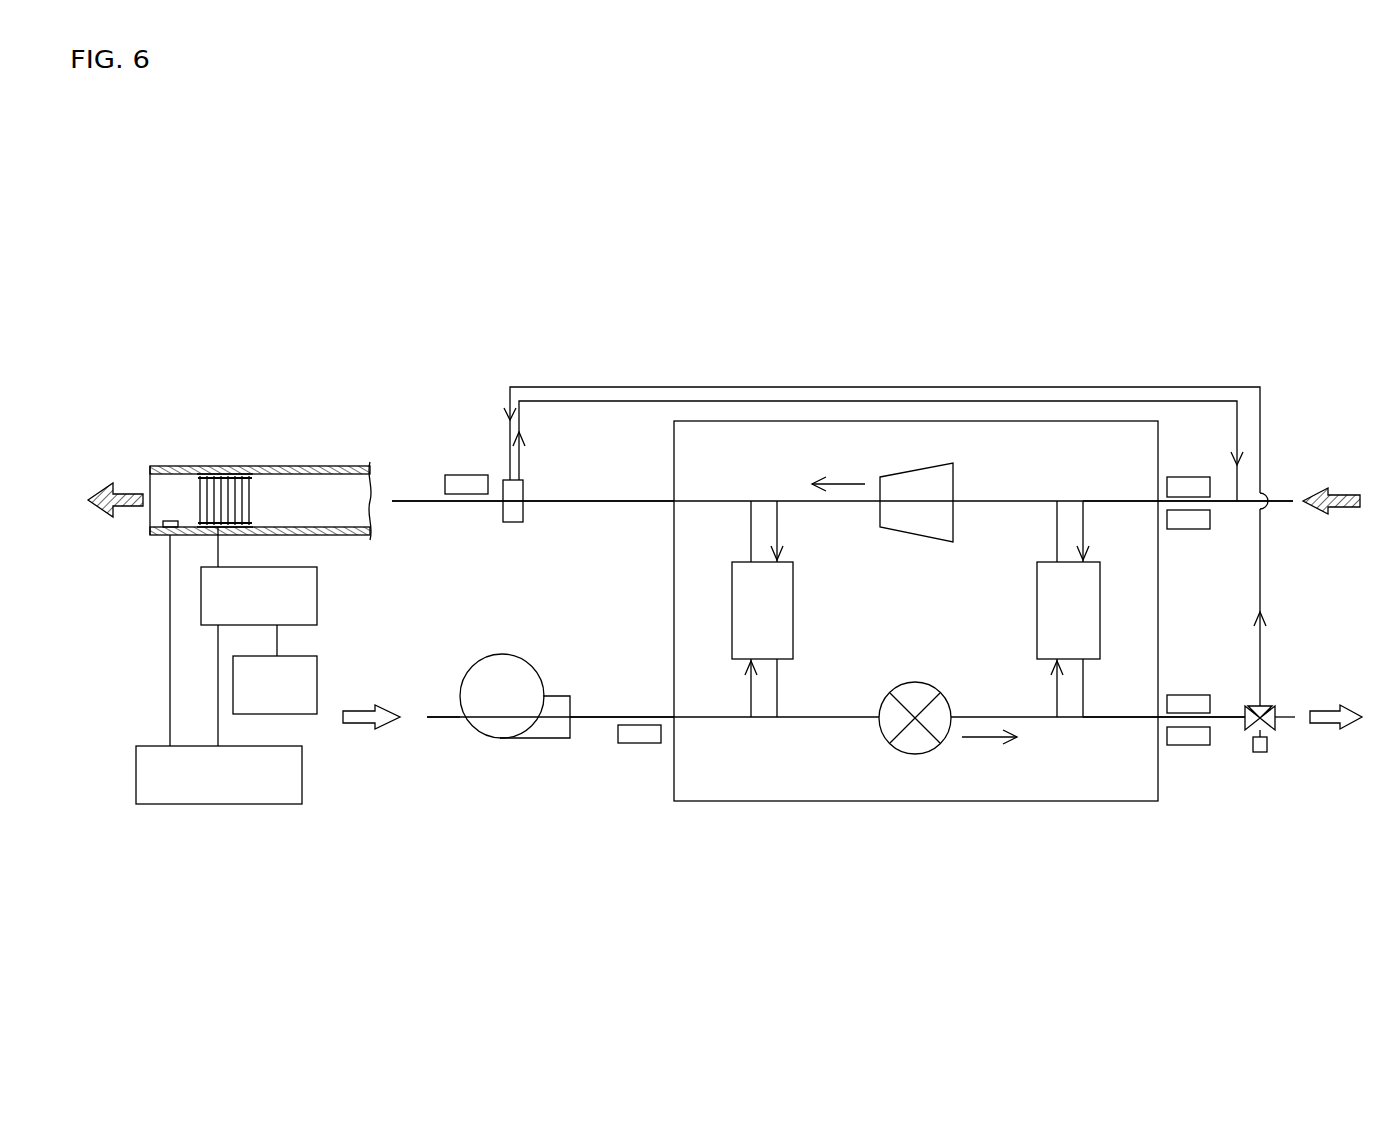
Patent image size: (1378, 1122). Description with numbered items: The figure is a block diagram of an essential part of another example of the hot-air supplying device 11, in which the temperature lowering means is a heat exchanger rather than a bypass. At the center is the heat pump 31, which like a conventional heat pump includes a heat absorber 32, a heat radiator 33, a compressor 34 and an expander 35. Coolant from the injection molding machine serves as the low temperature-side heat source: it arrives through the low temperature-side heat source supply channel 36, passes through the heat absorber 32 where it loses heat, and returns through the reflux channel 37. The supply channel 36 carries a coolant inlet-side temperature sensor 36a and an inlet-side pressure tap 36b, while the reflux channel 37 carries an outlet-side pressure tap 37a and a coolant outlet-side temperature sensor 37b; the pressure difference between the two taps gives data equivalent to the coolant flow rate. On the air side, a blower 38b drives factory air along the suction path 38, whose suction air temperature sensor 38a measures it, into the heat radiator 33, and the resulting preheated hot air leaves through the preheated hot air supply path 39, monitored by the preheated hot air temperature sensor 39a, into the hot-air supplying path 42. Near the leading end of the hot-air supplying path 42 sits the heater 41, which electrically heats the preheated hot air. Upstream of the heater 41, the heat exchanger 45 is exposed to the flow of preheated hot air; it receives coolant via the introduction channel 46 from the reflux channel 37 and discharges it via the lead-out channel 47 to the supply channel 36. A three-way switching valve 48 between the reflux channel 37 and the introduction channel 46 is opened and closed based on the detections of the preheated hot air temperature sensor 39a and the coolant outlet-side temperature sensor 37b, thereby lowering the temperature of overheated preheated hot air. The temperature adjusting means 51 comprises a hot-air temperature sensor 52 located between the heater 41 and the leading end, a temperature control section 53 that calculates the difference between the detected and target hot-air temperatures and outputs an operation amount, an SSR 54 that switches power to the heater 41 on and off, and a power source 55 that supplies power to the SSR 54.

The hot-air supplying device 11 is at (1060, 305).
The heat pump 31 is at (925, 420).
The heat absorber 32 is at (1102, 640).
The heat radiator 33 is at (795, 612).
The compressor 34 is at (957, 470).
The expander 35 is at (945, 693).
The low temperature-side heat source supply channel 36 is at (1105, 499).
The coolant inlet-side temperature sensor 36a is at (1190, 475).
The inlet-side pressure tap 36b is at (1190, 531).
The reflux channel 37 is at (1105, 720).
The outlet-side pressure tap 37a is at (1190, 693).
The coolant outlet-side temperature sensor 37b is at (1190, 747).
The suction path 38 is at (590, 720).
The suction air temperature sensor 38a is at (640, 745).
The blower 38b is at (485, 738).
The preheated hot air supply path 39 is at (584, 499).
The preheated hot air temperature sensor 39a is at (470, 474).
The heater 41 is at (226, 472).
The hot-air supplying path 42 is at (290, 466).
The heat exchanger 45 is at (513, 524).
The introduction channel 46 is at (1090, 386).
The lead-out channel 47 is at (1142, 400).
The three-way switching valve 48 is at (1270, 745).
The temperature adjusting means 51 is at (336, 775).
The hot-air temperature sensor 52 is at (157, 536).
The temperature control section 53 is at (205, 806).
The SSR 54 is at (320, 597).
The power source 55 is at (320, 680).